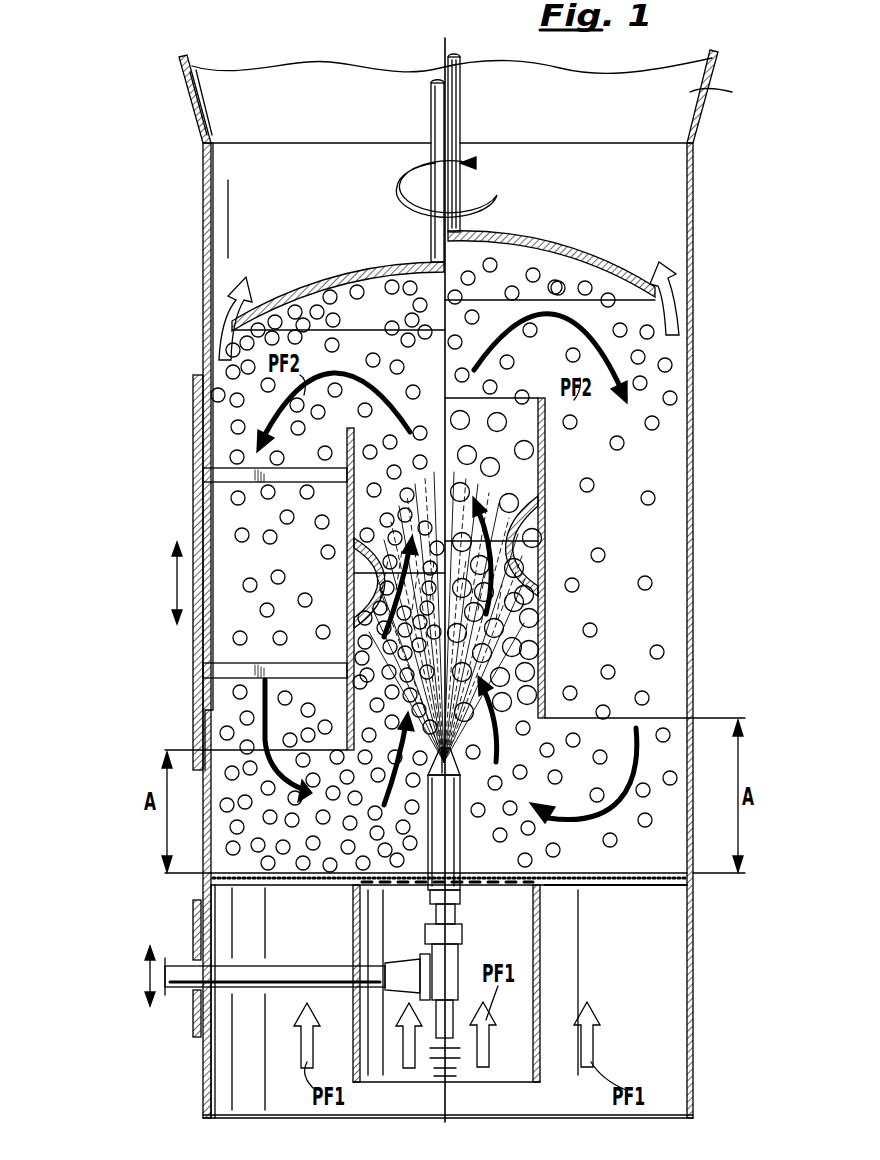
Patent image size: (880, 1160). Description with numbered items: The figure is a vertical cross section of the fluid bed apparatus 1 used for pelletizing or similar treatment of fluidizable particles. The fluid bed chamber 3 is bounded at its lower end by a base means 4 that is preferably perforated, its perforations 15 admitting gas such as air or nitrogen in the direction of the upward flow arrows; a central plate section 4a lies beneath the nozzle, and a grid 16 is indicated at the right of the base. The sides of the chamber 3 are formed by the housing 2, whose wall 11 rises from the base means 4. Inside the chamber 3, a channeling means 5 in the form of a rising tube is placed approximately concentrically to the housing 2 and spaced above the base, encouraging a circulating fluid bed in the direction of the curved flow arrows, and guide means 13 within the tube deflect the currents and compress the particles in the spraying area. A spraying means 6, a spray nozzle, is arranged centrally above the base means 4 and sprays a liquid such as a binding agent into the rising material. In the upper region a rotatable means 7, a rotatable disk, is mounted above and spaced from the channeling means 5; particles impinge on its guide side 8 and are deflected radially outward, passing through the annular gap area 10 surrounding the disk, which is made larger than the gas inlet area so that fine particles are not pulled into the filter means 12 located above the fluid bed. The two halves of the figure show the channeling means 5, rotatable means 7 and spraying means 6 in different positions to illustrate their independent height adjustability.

The apparatus 1 is at (172, 488).
The housing 2 is at (198, 284).
The fluid bed chamber 3 is at (672, 532).
The base means 4 is at (633, 887).
The central plate section 4a is at (493, 887).
The channeling means 5 is at (347, 442).
The spraying means 6 is at (452, 855).
The rotatable means 7 is at (350, 274).
The guide side 8 is at (530, 253).
The annular gap area 10 is at (234, 318).
The wall of the housing 11 is at (193, 405).
The filter means 12 is at (690, 94).
The guide means 13 is at (356, 576).
The perforations 15 is at (576, 887).
The grid 16 is at (652, 873).